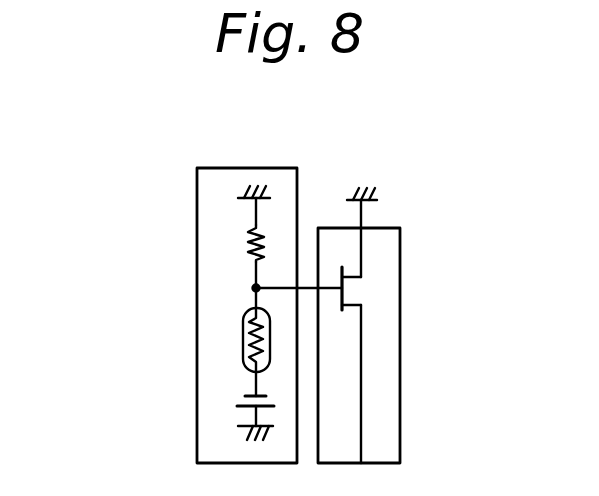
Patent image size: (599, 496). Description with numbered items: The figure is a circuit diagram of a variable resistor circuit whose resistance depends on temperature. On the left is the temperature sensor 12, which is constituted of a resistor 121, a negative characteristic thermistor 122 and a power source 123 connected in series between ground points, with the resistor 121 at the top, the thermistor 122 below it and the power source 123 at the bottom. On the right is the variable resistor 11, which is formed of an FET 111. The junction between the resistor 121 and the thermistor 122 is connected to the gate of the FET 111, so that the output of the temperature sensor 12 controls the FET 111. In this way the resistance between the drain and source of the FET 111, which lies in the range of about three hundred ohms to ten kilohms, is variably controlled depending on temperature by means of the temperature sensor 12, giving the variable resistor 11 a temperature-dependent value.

The temperature sensor 12 is at (197, 195).
The resistor 121 is at (253, 251).
The negative characteristic thermistor 122 is at (243, 336).
The power source 123 is at (243, 397).
The variable resistor 11 is at (402, 238).
The FET 111 is at (357, 287).